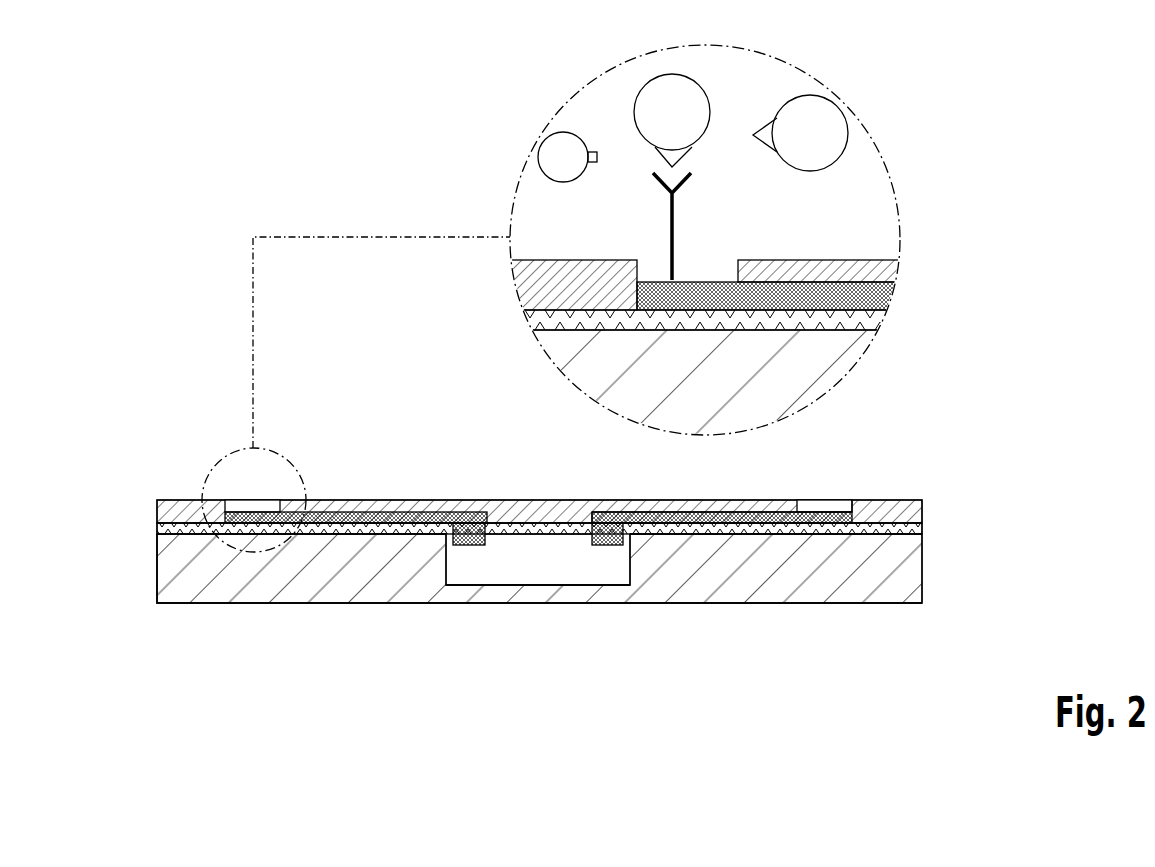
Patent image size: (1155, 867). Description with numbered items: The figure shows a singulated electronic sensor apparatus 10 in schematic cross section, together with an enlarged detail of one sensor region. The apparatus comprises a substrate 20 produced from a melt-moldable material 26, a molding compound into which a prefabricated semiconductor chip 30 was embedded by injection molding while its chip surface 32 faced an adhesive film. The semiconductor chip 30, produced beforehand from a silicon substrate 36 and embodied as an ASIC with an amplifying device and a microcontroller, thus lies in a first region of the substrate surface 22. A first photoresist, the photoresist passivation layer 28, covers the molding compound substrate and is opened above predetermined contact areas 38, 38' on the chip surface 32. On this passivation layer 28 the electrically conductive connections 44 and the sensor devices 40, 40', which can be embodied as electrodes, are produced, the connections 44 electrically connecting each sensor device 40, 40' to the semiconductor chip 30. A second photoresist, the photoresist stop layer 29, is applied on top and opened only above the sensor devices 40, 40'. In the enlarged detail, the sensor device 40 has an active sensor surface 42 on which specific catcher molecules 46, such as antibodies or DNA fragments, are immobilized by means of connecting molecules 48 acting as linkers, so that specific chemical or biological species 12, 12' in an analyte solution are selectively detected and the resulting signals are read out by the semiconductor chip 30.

The electronic sensor apparatus 10 is at (150, 432).
The chemical or biological species 12 is at (672, 85).
The chemical or biological species 12' is at (550, 141).
The substrate 20 is at (167, 565).
The substrate surface 22 is at (167, 523).
The melt-moldable material 26 is at (913, 585).
The photoresist passivation layer 28 is at (913, 528).
The photoresist stop layer 29 is at (915, 508).
The semiconductor chip 30 is at (452, 580).
The chip surface 32 is at (550, 523).
The silicon substrate 36 is at (522, 567).
The contact area 38 is at (469, 583).
The contact area 38' is at (608, 583).
The sensor device 40 is at (461, 371).
The sensor device 40' is at (731, 466).
The active sensor surface 42 is at (237, 507).
The electrically conductive connection 44 is at (267, 503).
The catcher molecule 46 is at (668, 207).
The connecting molecule 48 is at (647, 263).